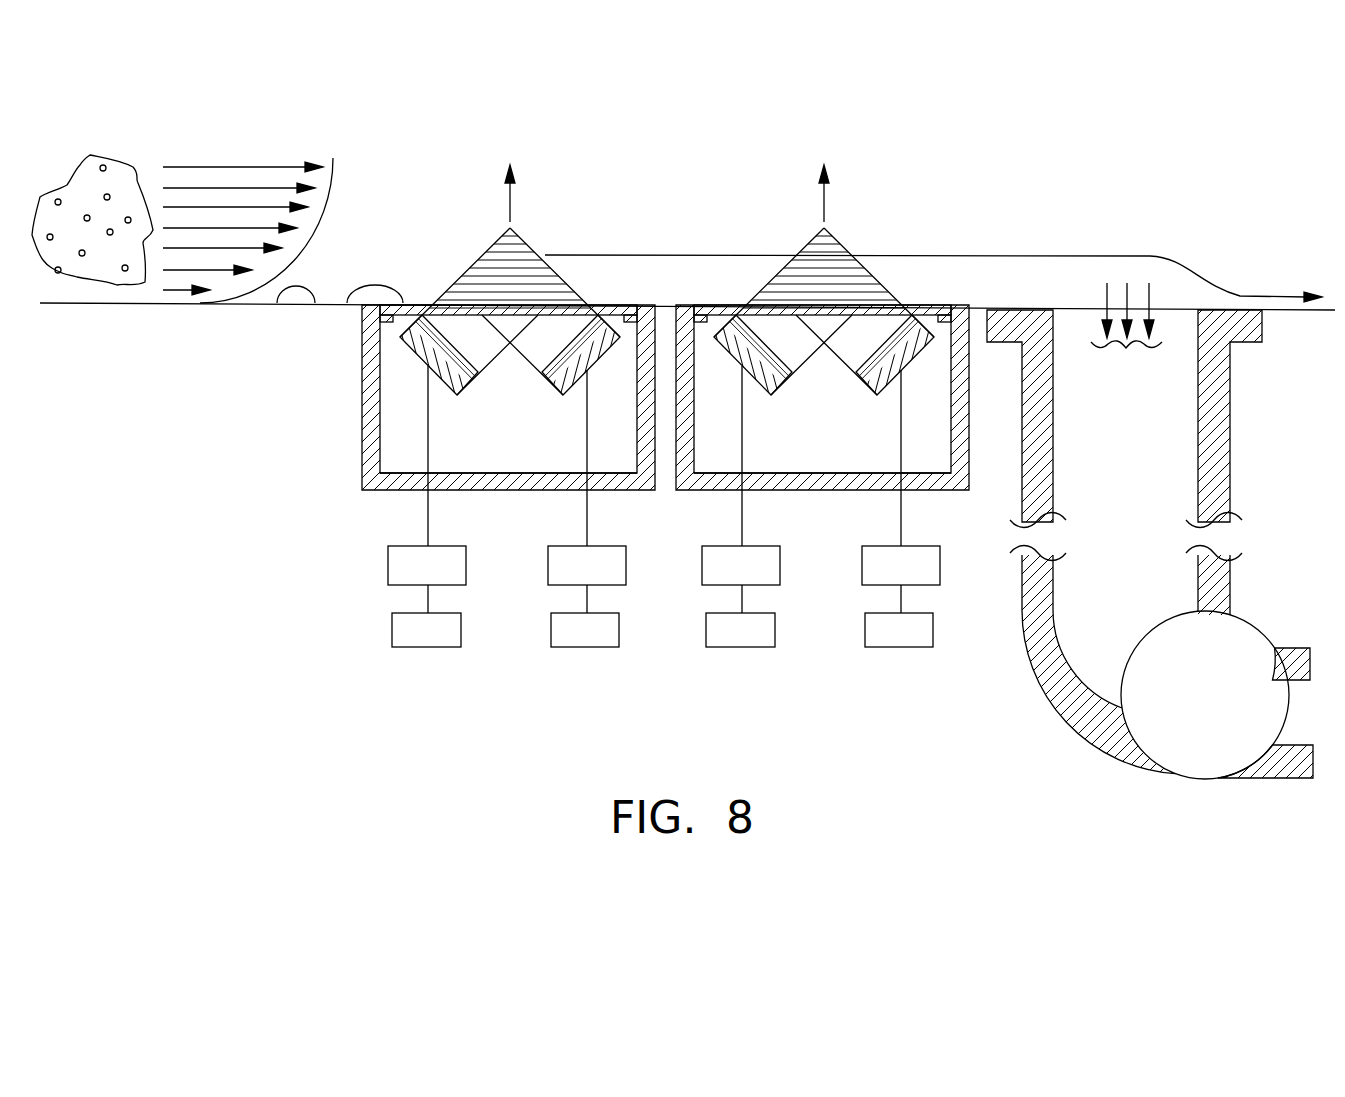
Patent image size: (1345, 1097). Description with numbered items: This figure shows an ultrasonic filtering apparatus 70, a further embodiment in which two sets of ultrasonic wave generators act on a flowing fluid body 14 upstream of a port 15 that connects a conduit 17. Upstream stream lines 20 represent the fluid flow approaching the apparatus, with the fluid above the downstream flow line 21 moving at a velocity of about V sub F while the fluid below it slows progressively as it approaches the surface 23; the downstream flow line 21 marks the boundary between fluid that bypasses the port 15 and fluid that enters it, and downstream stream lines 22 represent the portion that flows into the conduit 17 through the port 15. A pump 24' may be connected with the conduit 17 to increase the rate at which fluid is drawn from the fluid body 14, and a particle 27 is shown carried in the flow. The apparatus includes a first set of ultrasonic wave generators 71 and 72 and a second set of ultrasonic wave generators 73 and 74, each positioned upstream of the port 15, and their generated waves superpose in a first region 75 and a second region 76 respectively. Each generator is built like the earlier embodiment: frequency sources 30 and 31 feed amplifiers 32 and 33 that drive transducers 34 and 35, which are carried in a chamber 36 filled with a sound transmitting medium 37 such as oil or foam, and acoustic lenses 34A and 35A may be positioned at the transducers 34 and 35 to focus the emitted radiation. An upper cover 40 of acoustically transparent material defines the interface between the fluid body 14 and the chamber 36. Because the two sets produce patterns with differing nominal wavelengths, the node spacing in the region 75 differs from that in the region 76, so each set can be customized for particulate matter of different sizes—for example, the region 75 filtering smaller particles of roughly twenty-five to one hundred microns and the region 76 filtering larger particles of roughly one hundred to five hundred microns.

The flowing fluid body 14 is at (413, 216).
The port 15 is at (1215, 368).
The conduit 17 is at (1228, 445).
The upstream stream lines 20 is at (114, 127).
The downstream flow line 21 is at (276, 165).
The downstream stream lines 22 is at (1126, 352).
The surface 23 is at (278, 303).
The pump 24' is at (1225, 684).
The contaminant particle 27 is at (80, 166).
The frequency source 30 is at (392, 633).
The frequency source 31 is at (551, 633).
The amplifier 32 is at (388, 565).
The amplifier 33 is at (548, 565).
The transducer 34 is at (416, 373).
The acoustic lens 34A is at (477, 373).
The transducer 35 is at (601, 364).
The acoustic lens 35A is at (547, 377).
The chamber 36 is at (522, 491).
The sound transmitting medium 37 is at (476, 456).
The upper cover 40 is at (352, 303).
The ultrasonic filtering apparatus 70 is at (958, 179).
The ultrasonic wave generator 71 is at (402, 448).
The ultrasonic wave generator 72 is at (600, 458).
The ultrasonic wave generator 73 is at (716, 462).
The ultrasonic wave generator 74 is at (918, 458).
The first region 75 is at (561, 236).
The second region 76 is at (875, 236).